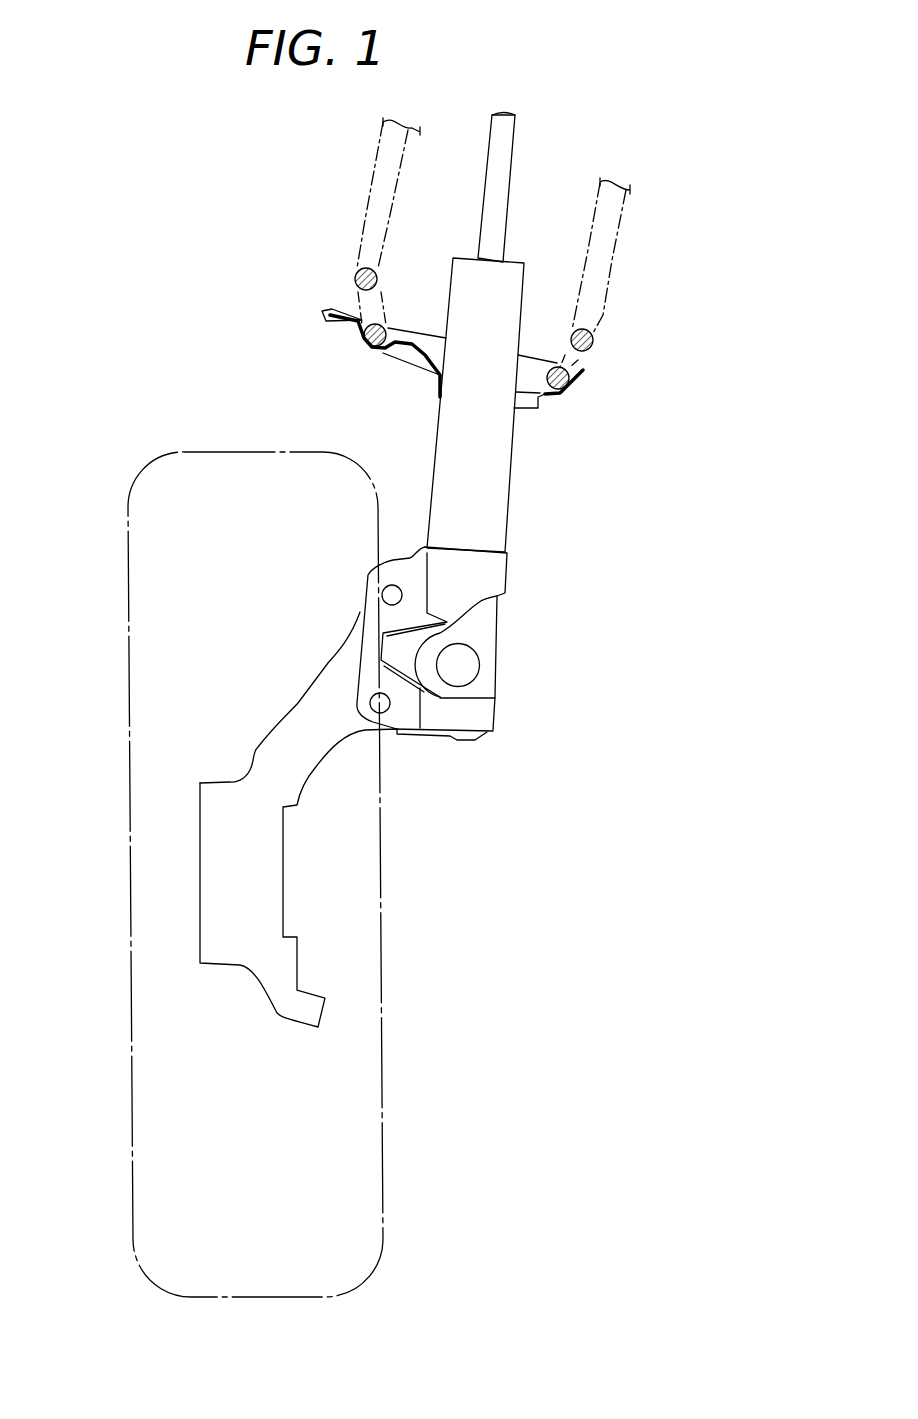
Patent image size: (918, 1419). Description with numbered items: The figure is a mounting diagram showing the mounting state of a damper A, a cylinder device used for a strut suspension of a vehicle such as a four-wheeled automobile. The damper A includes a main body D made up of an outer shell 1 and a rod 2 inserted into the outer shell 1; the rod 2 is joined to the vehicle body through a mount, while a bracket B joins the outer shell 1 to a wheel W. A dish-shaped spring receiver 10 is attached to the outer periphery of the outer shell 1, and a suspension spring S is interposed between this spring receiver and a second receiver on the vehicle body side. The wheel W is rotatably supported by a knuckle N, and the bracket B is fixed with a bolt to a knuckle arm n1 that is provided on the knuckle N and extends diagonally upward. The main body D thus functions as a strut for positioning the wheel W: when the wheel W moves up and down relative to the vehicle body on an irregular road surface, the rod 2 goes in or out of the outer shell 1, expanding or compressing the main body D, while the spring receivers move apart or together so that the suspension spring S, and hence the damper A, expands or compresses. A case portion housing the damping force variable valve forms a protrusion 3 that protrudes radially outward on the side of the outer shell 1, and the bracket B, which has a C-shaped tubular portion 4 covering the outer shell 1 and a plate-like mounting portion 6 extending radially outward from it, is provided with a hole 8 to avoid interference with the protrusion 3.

The outer shell 1 is at (440, 433).
The rod 2 is at (505, 155).
The protrusion 3 is at (460, 668).
The tubular portion 4 is at (495, 573).
The mounting portion 6 is at (392, 565).
The hole 8 is at (483, 605).
The spring receiver 10 is at (328, 327).
The damper A is at (442, 333).
The bracket B is at (479, 665).
The main body D is at (486, 333).
The suspension spring S is at (355, 278).
The wheel W is at (128, 545).
The knuckle N is at (270, 819).
The knuckle arm n1 is at (298, 703).